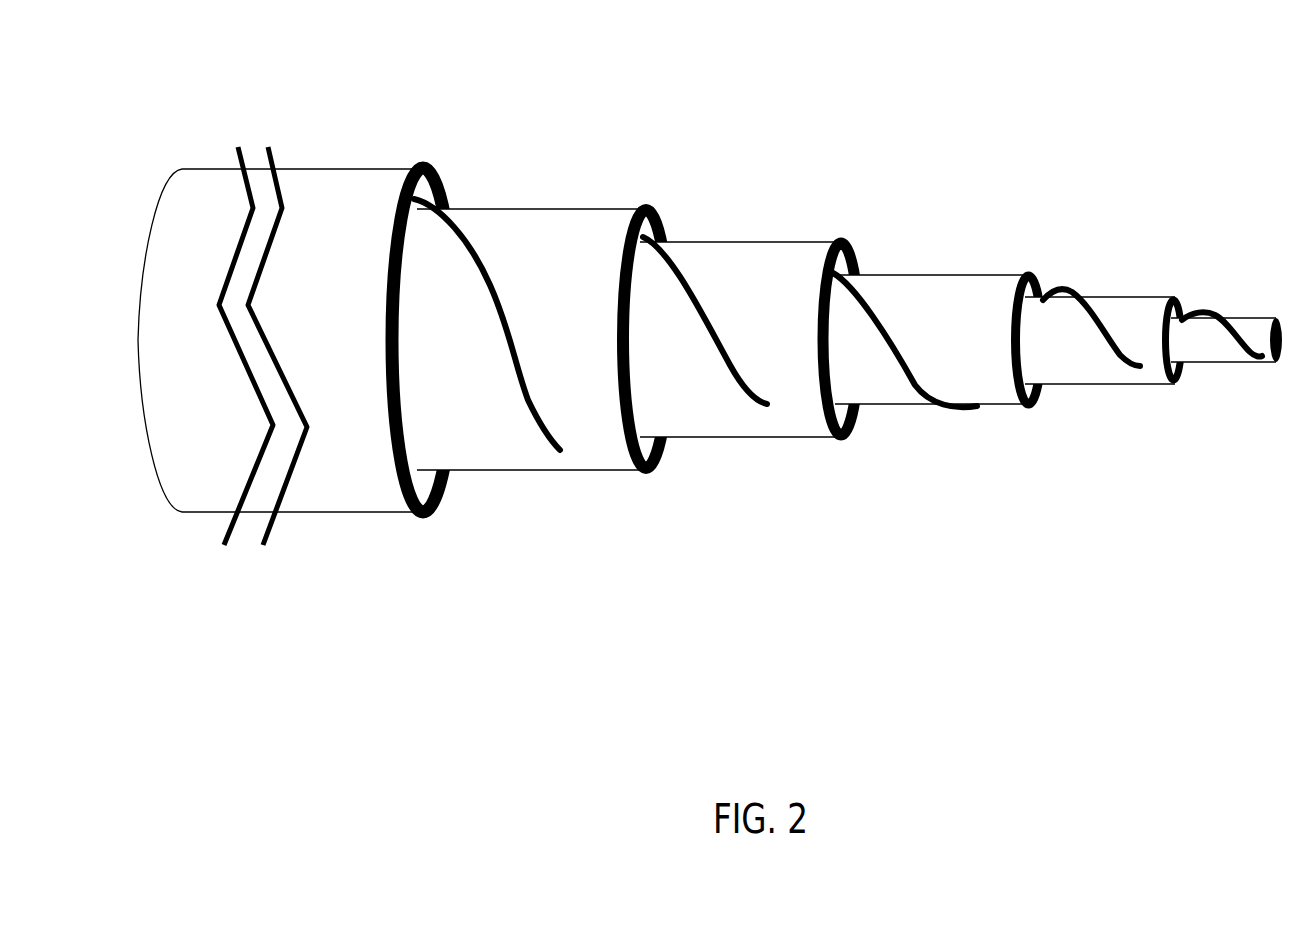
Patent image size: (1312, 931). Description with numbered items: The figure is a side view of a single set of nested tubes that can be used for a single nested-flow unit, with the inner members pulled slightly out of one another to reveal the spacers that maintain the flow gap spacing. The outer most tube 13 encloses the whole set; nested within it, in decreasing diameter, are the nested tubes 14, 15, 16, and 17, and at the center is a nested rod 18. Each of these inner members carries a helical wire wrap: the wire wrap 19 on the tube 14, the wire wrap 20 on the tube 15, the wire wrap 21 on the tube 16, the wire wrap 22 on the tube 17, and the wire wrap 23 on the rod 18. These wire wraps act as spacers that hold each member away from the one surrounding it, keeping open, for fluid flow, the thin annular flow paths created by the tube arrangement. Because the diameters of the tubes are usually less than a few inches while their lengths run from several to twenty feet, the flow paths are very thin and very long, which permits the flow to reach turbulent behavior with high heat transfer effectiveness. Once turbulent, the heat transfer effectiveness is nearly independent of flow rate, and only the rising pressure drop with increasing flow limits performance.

The outer most tube 13 is at (362, 160).
The nested tube 14 is at (566, 202).
The nested tube 15 is at (804, 234).
The nested tube 16 is at (966, 265).
The nested tube 17 is at (1128, 288).
The nested rod 18 is at (1245, 308).
The wire wrap 19 is at (525, 423).
The wire wrap 20 is at (730, 394).
The wire wrap 21 is at (904, 390).
The wire wrap 22 is at (1097, 348).
The wire wrap 23 is at (1228, 345).